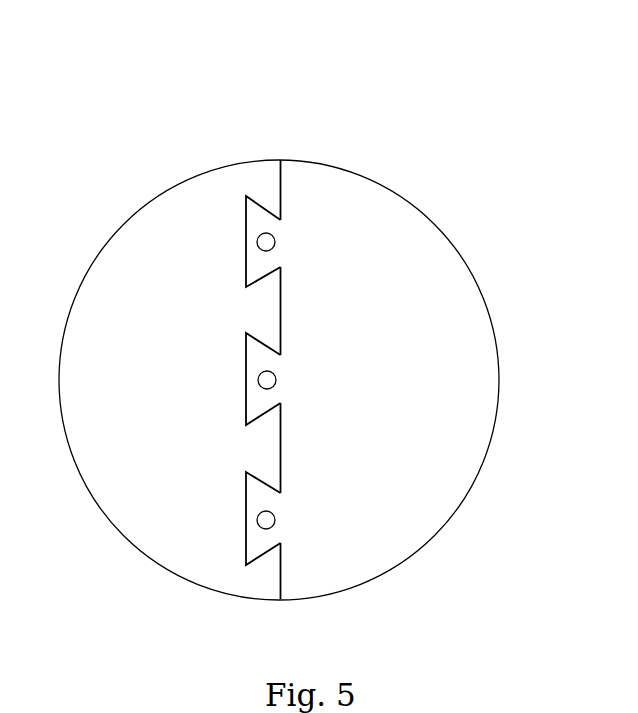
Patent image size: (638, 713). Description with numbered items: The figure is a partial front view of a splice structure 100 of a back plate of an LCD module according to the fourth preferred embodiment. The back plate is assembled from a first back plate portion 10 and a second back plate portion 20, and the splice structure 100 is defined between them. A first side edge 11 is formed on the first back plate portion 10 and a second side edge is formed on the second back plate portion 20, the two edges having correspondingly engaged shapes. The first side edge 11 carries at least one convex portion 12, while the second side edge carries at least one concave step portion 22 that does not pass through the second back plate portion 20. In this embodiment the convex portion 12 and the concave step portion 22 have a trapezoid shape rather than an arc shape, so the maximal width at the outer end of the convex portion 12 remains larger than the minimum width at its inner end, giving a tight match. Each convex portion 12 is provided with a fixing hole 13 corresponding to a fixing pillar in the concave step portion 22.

The splice structure 100 is at (600, 50).
The first back plate portion 10 is at (446, 196).
The second back plate portion 20 is at (105, 188).
The first side edge 11 is at (282, 195).
The convex portion 12 is at (262, 372).
The concave step portion 22 is at (246, 405).
The fixing hole 13 is at (266, 242).